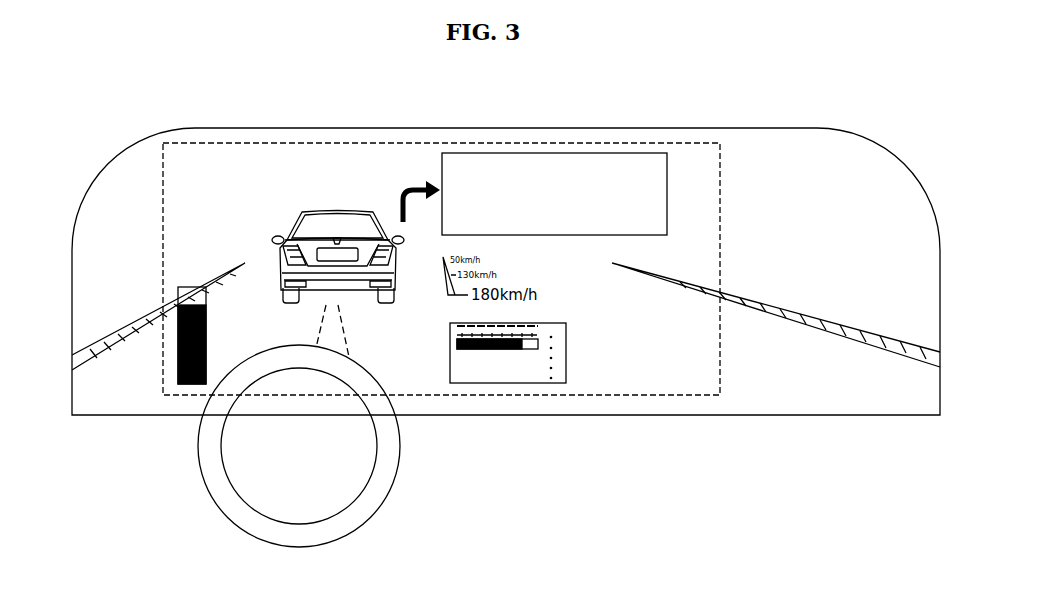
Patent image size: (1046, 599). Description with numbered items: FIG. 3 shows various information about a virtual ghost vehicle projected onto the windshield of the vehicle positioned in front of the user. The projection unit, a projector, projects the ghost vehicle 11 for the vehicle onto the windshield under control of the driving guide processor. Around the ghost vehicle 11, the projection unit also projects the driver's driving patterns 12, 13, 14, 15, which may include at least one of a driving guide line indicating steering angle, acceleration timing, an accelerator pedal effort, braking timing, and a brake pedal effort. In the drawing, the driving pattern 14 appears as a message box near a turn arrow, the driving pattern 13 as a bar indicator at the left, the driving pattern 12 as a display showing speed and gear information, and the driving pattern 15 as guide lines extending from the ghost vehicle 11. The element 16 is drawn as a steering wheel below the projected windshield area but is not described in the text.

The ghost vehicle 11 is at (318, 212).
The driving pattern 12 is at (542, 383).
The driving pattern 13 is at (178, 372).
The driving pattern 14 is at (571, 152).
The driving pattern 15 is at (337, 334).
The steering wheel 16 is at (199, 462).